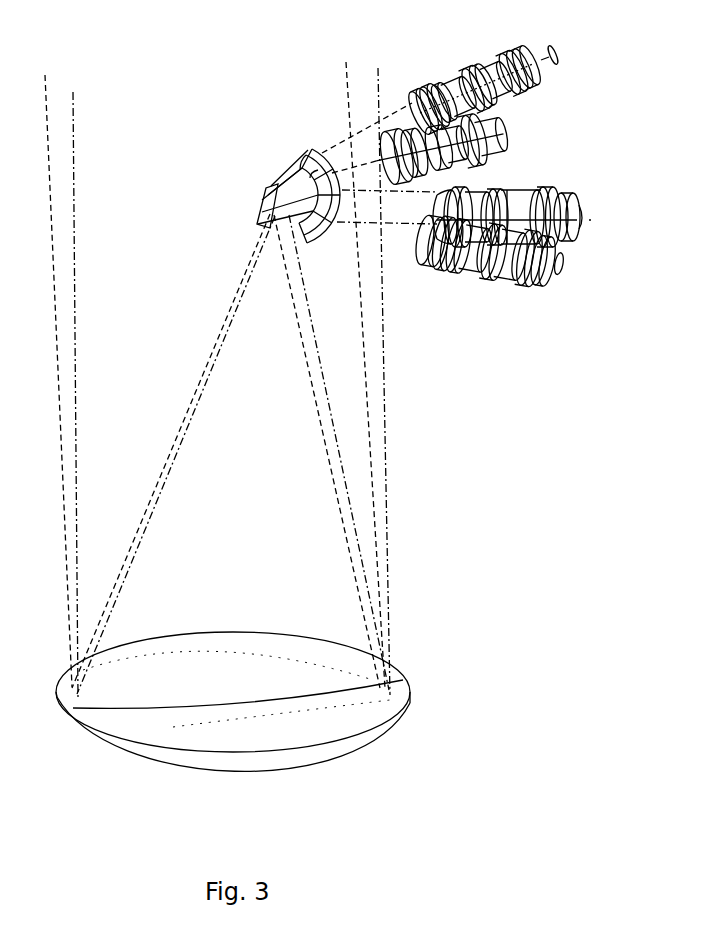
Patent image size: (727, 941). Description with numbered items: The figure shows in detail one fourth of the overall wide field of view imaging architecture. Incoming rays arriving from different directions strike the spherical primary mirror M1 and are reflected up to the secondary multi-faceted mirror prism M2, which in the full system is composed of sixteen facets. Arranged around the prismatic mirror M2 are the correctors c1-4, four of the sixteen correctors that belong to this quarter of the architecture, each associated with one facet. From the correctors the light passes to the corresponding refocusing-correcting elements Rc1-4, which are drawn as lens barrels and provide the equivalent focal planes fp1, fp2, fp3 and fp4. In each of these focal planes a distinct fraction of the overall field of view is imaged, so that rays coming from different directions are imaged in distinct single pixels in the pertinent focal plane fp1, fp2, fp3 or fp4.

The spherical primary mirror M1 is at (233, 701).
The secondary multi-faceted mirror prism M2 is at (268, 189).
The correctors c1-4 is at (308, 173).
The refocusing-correcting elements Rc1-4 is at (474, 75).
The focal plane fp1 is at (573, 55).
The focal plane fp2 is at (458, 147).
The focal plane fp3 is at (595, 207).
The focal plane fp4 is at (501, 252).